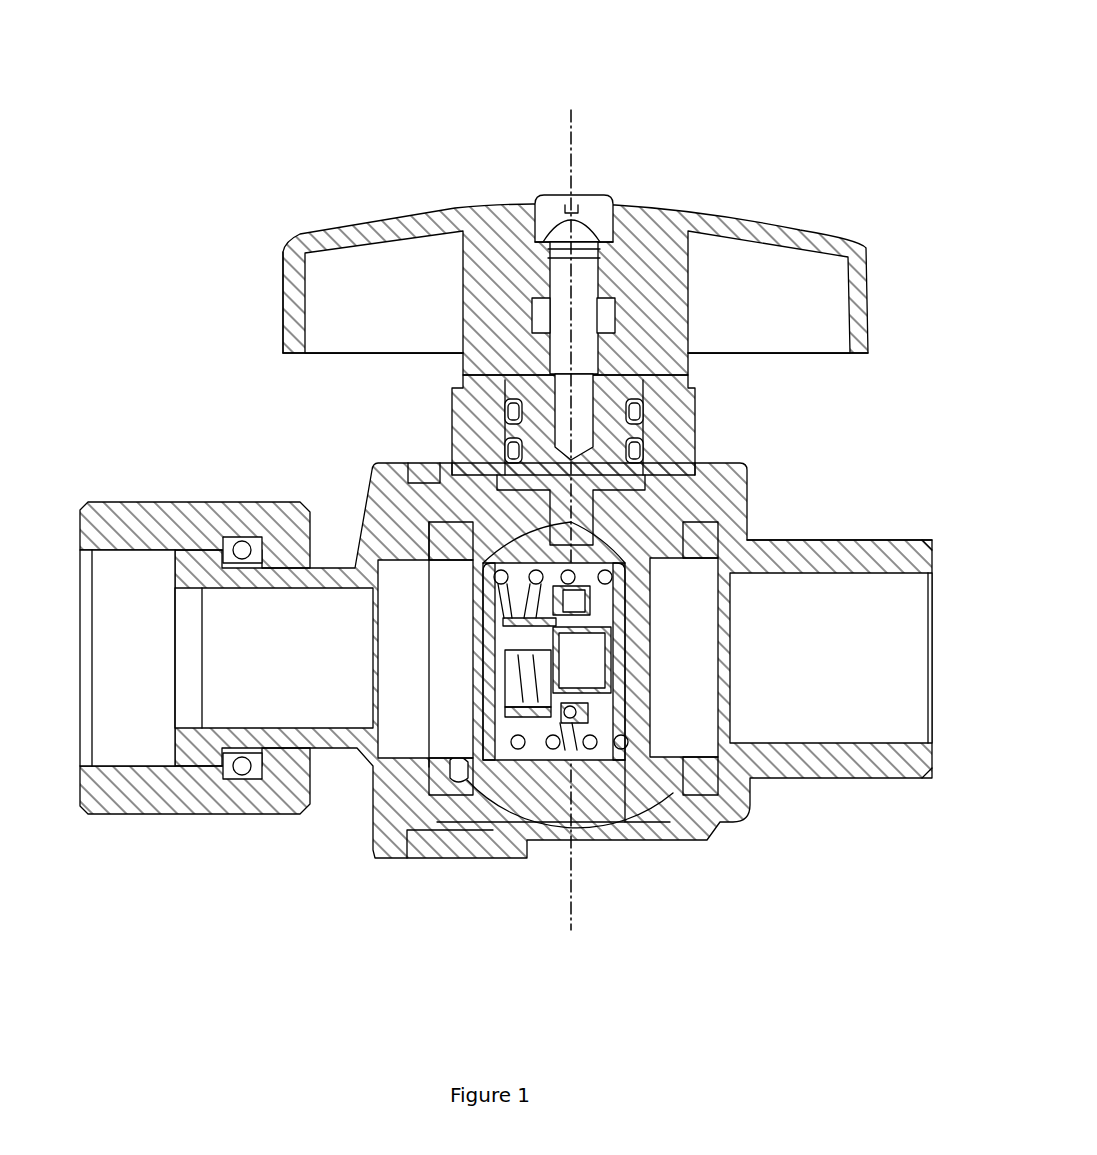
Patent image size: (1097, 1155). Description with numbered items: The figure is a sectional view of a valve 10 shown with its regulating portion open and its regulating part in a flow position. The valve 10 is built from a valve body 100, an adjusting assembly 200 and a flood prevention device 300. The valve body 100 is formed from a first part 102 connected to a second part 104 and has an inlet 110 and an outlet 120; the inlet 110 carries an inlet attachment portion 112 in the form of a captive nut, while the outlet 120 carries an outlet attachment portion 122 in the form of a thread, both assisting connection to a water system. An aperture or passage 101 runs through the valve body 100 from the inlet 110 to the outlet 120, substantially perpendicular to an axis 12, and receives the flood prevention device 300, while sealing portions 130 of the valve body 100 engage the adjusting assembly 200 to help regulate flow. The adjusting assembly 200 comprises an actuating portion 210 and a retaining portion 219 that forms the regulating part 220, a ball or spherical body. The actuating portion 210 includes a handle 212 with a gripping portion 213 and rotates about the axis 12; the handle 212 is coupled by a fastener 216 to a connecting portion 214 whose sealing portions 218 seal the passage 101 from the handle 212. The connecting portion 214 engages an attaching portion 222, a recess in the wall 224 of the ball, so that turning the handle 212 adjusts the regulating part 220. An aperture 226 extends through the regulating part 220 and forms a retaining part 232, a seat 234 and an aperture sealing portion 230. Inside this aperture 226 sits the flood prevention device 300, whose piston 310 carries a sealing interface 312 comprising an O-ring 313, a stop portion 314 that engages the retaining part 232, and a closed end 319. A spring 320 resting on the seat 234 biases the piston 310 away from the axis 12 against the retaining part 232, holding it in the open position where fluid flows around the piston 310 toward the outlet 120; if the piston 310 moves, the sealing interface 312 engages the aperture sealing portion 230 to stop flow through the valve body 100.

The valve 10 is at (782, 88).
The axis 12 is at (575, 120).
The valve body 100 is at (185, 405).
The aperture or passage 101 is at (300, 660).
The first part 102 is at (368, 533).
The second part 104 is at (918, 545).
The inlet 110 is at (80, 680).
The inlet attachment portion 112 is at (128, 500).
The outlet 120 is at (922, 657).
The outlet attachment portion 122 is at (873, 532).
The sealing portions 130 is at (487, 507).
The adjusting assembly 200 is at (323, 135).
The actuating portion 210 is at (290, 205).
The handle 212 is at (287, 300).
The gripping portion 213 is at (283, 343).
The connecting portion 214 is at (617, 460).
The fastener 216 is at (588, 287).
The sealing portion 218 is at (508, 410).
The retaining portion 219 is at (362, 977).
The regulating part 220 is at (502, 808).
The attaching portion 222 is at (560, 528).
The wall 224 is at (607, 808).
The aperture 226 is at (683, 655).
The aperture sealing portion 230 is at (630, 750).
The retaining part 232 is at (472, 787).
The seat 234 is at (650, 605).
The flood prevention device 300 is at (508, 943).
The piston 310 is at (533, 748).
The sealing interface 312 is at (598, 600).
The O-ring 313 is at (577, 603).
The stop portion 314 is at (487, 567).
The closed end 319 is at (625, 655).
The spring 320 is at (572, 762).